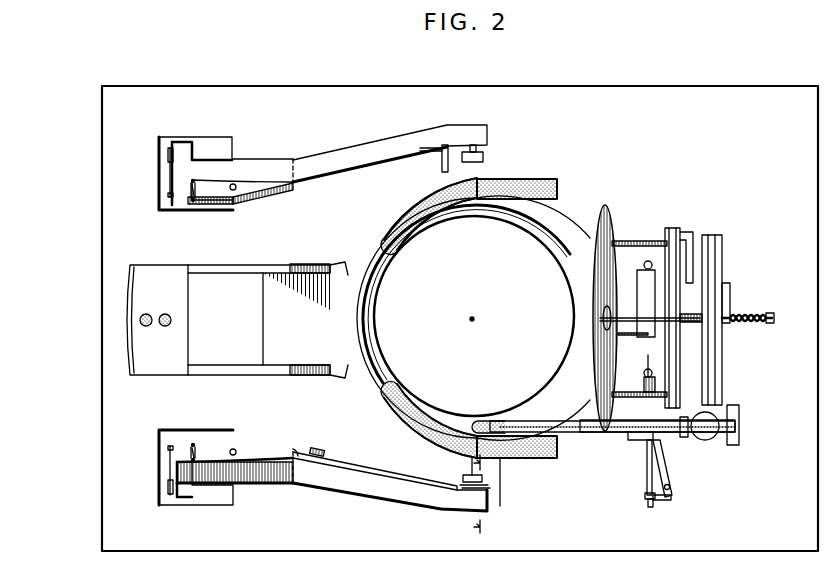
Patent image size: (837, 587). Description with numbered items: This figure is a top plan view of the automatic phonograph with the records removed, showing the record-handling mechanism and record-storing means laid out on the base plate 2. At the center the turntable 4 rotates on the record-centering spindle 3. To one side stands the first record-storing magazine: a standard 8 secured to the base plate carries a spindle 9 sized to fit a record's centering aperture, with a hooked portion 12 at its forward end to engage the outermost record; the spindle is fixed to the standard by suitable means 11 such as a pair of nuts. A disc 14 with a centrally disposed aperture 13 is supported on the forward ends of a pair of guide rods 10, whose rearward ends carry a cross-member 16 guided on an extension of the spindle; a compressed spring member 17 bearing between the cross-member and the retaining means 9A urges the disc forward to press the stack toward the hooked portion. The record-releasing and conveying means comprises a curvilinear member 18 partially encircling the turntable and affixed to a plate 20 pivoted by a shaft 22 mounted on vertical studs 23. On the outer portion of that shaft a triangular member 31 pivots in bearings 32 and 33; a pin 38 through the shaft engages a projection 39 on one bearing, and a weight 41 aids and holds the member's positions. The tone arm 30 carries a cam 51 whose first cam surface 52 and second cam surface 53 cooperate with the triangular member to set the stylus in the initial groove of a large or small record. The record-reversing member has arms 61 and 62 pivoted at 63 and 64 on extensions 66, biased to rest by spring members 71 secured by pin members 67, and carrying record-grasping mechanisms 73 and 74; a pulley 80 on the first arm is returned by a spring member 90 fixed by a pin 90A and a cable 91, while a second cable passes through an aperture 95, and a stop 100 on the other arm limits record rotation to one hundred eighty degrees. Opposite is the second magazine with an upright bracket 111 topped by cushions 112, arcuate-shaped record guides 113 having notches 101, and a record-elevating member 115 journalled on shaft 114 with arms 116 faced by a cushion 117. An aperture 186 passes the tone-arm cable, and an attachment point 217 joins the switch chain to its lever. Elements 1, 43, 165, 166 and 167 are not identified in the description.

The frame 1 is at (130, 84).
The base plate 2 is at (302, 87).
The record-centering spindle 3 is at (473, 318).
The turntable 4 is at (385, 338).
The standard 8 is at (673, 238).
The spindle 9 is at (640, 336).
The retaining means 9A is at (775, 317).
The guide rods 10 is at (634, 240).
The suitable means 11 is at (690, 323).
The hooked portion 12 is at (603, 323).
The centrally disposed aperture 13 is at (603, 310).
The disc 14 is at (600, 218).
The cross-member 16 is at (722, 252).
The compressed spring member 17 is at (748, 313).
The curvilinear member 18 is at (385, 240).
The plate 20 is at (640, 288).
The shaft 22 is at (646, 470).
The vertical studs 23 is at (648, 261).
The tone arm 30 is at (535, 420).
The triangular member 31 is at (668, 482).
The bearing 32 is at (656, 387).
The bearing 33 is at (645, 496).
The pin 38 is at (660, 502).
The projection 39 is at (648, 506).
The weight 41 is at (670, 490).
The slide end 43 is at (480, 420).
The cam 51 is at (643, 448).
The first cam surface 52 is at (628, 442).
The second cam surface 53 is at (670, 438).
The arm 61 is at (356, 490).
The arm 62 is at (343, 155).
The pivot 63 is at (236, 190).
The pivot 64 is at (235, 450).
The extensions 66 is at (260, 158).
The pin members 67 is at (194, 181).
The spring members 71 is at (190, 202).
The record-grasping mechanism 73 is at (483, 479).
The record-grasping mechanism 74 is at (484, 156).
The pulley 80 is at (491, 488).
The spring member 90 is at (323, 453).
The pin 90A is at (296, 449).
The cable 91 is at (353, 461).
The aperture 95 is at (501, 503).
The stop 100 is at (440, 150).
The notches 101 is at (244, 266).
The upright bracket 111 is at (130, 292).
The cushions 112 is at (165, 313).
The arcuate-shaped record guides 113 is at (292, 265).
The shaft 114 is at (264, 266).
The record-elevating member 115 is at (333, 262).
The arms 116 is at (530, 180).
The cushion 117 is at (415, 203).
The plate 165 is at (168, 172).
The clip 166 is at (166, 152).
The clip 167 is at (168, 197).
The aperture 186 is at (740, 415).
The attachment point 217 is at (693, 440).